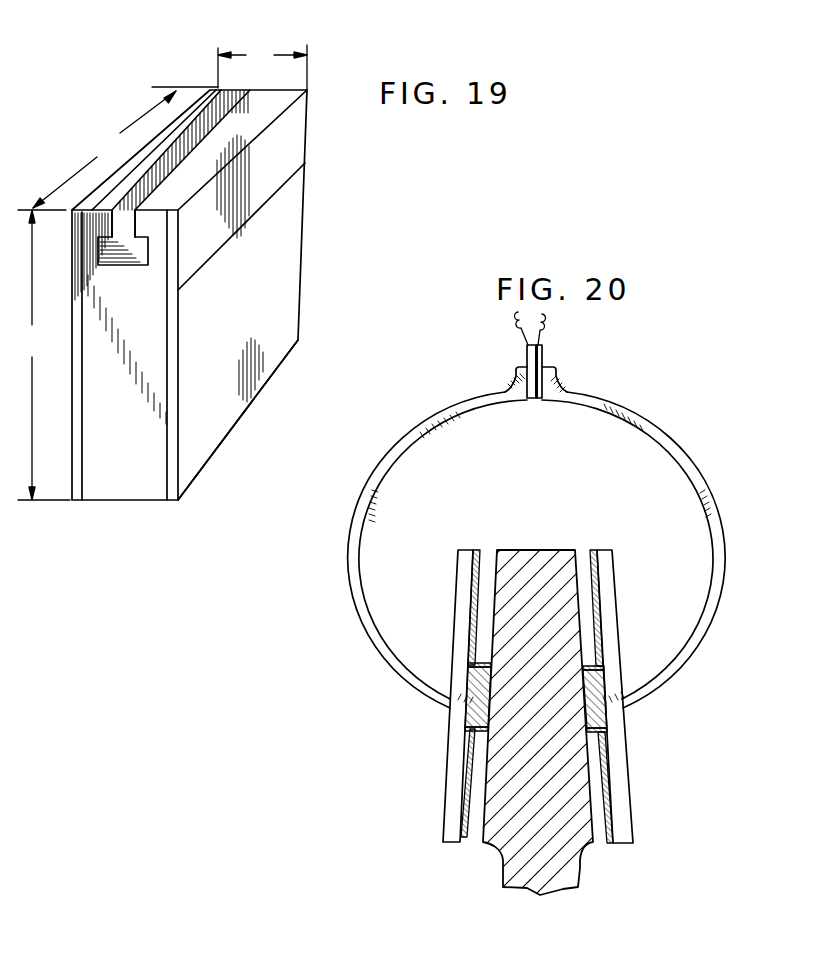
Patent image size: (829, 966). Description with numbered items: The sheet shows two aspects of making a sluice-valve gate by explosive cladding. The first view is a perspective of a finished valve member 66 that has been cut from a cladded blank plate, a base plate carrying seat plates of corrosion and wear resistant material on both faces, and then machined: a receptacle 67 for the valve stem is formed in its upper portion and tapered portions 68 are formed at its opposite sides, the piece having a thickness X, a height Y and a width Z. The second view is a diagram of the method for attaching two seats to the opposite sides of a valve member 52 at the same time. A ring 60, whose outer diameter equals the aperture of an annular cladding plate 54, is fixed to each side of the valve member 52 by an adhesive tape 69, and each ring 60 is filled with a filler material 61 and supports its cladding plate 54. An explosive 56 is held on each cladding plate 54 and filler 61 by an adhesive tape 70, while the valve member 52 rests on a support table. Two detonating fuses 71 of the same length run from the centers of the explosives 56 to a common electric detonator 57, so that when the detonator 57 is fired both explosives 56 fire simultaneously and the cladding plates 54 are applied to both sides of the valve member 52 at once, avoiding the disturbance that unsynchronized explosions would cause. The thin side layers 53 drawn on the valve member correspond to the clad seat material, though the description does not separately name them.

In FIG. 19, the valve member 52 is at (126, 497).
In FIG. 20, the valve member 52 is at (507, 850).
In FIG. 19, the side layers 53 is at (80, 505).
In FIG. 20, the annular cladding plate 54 is at (612, 788).
In FIG. 20, the explosive 56 is at (608, 570).
In FIG. 20, the common electric detonator 57 is at (543, 357).
In FIG. 20, the ring 60 is at (597, 738).
In FIG. 20, the filler material 61 is at (600, 712).
In FIG. 19, the valve member 66 is at (308, 175).
In FIG. 19, the receptacle for valve stem 67 is at (216, 124).
In FIG. 19, the tapered portion 68 is at (297, 270).
In FIG. 20, the adhesive tape 69 is at (489, 683).
In FIG. 20, the adhesive tape 70 is at (467, 713).
In FIG. 20, the detonating fuse 71 is at (668, 455).